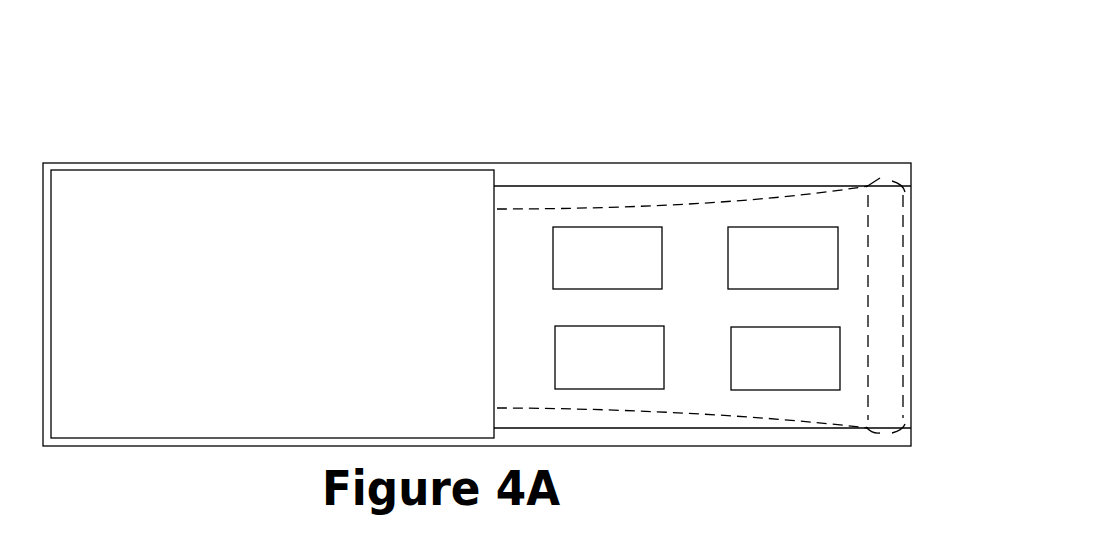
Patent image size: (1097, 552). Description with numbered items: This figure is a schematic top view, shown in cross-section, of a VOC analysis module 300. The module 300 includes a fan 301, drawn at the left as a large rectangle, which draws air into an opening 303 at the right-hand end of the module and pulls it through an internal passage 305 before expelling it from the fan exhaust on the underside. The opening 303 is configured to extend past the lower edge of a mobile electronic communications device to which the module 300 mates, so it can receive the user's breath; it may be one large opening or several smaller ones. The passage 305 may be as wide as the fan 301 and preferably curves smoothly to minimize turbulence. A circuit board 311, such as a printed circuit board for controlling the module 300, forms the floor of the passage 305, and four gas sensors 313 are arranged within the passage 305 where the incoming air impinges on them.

The VOC analysis module 300 is at (342, 92).
The fan 301 is at (292, 315).
The opening 303 is at (880, 258).
The internal passage 305 is at (520, 290).
The circuit board 311 is at (722, 318).
The gas sensors 313 is at (772, 352).